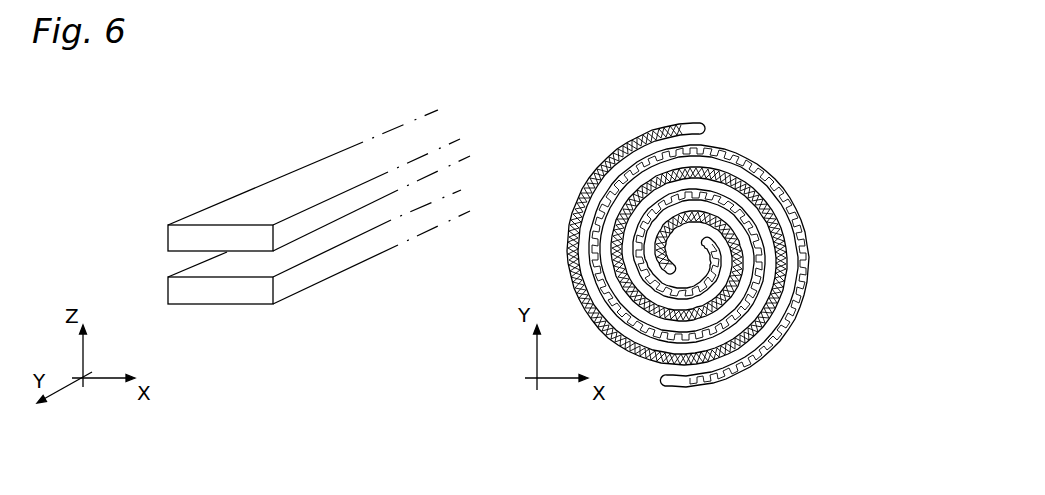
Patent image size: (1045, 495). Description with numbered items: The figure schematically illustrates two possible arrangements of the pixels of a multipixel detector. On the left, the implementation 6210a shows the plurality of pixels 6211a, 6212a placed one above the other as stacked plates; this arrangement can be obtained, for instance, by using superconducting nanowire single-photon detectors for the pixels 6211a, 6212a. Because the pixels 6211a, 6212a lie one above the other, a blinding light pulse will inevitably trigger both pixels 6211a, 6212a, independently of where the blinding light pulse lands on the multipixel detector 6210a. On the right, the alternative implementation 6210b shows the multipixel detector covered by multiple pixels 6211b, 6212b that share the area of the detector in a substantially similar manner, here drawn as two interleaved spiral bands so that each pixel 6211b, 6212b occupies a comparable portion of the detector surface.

The multipixel detector implementation 6210a is at (297, 175).
The pixel 6211a is at (167, 290).
The pixel 6212a is at (167, 233).
The multipixel detector implementation 6210b is at (759, 217).
The pixel 6211b is at (653, 128).
The pixel 6212b is at (753, 162).